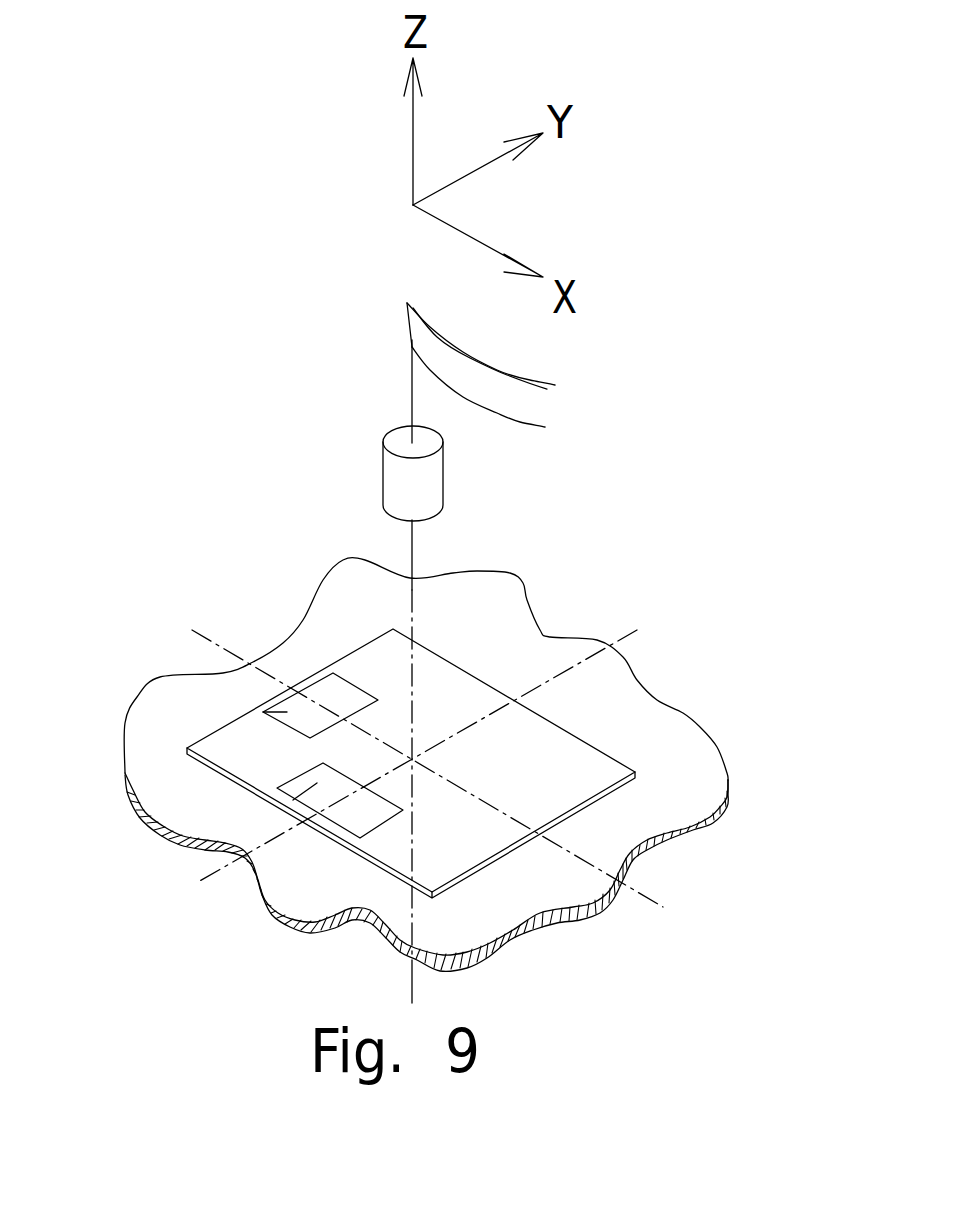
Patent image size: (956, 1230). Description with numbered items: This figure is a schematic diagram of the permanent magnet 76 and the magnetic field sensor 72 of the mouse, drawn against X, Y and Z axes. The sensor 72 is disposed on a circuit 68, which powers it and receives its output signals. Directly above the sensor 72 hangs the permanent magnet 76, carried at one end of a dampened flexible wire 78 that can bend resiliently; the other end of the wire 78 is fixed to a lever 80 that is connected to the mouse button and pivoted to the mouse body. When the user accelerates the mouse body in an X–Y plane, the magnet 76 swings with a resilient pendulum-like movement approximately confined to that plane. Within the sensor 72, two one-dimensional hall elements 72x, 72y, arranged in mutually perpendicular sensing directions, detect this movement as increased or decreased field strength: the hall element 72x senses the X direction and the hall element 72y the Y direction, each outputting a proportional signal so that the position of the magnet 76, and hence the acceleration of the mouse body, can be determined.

The circuit 68 is at (697, 780).
The magnetic field sensor 72 is at (583, 741).
The hall element 72x is at (262, 712).
The hall element 72y is at (178, 848).
The permanent magnet 76 is at (387, 477).
The dampened flexible wire 78 is at (410, 387).
The lever 80 is at (530, 403).